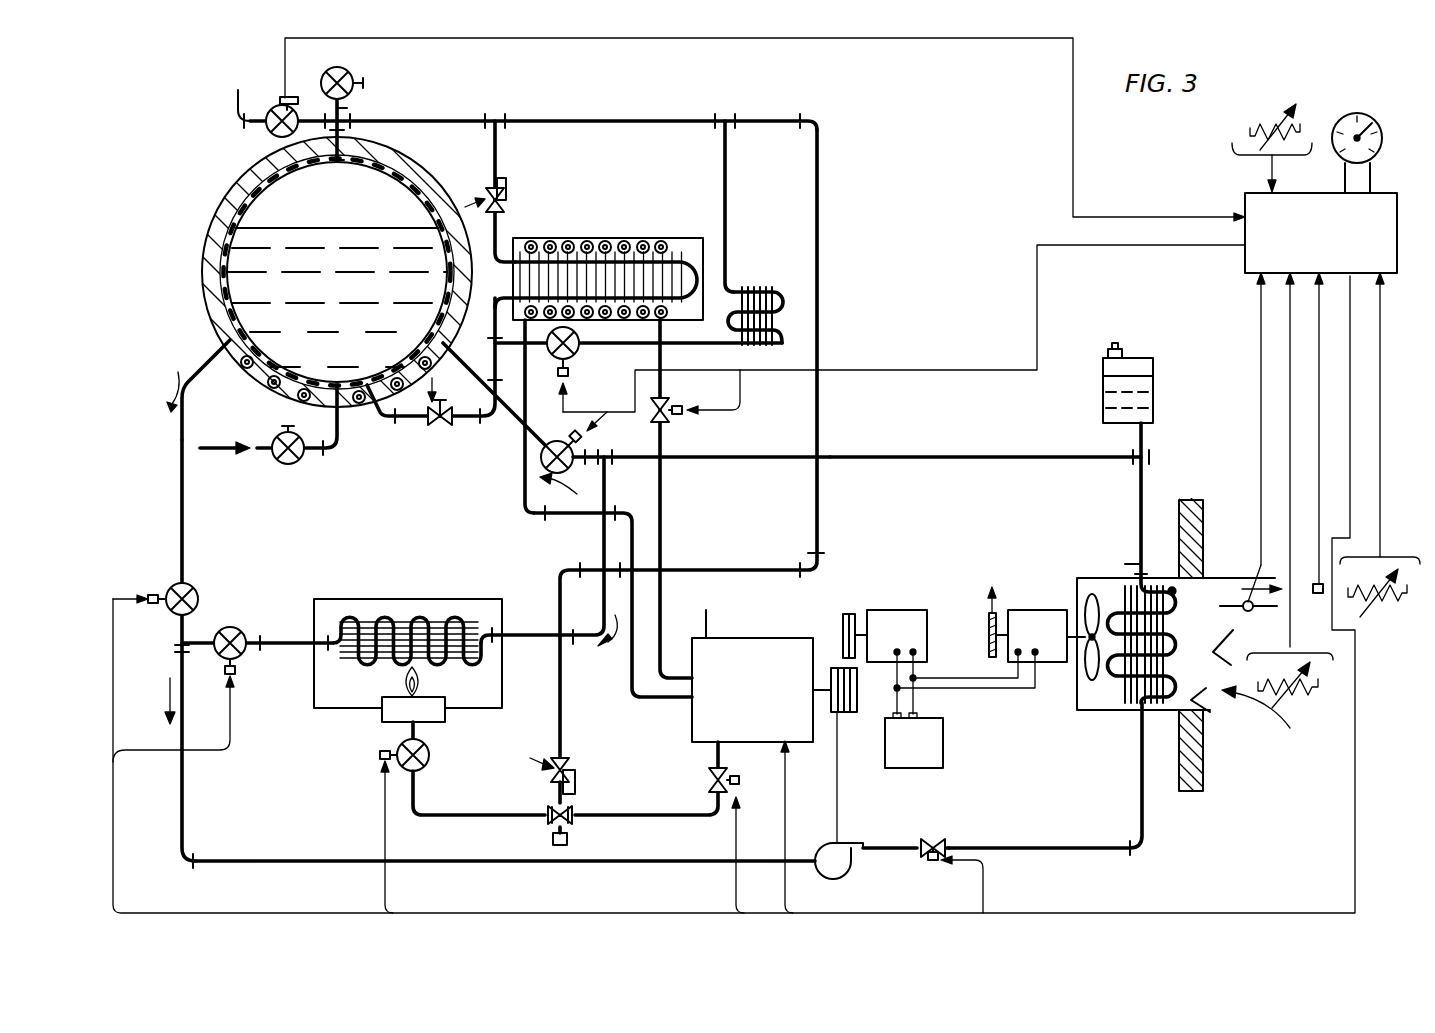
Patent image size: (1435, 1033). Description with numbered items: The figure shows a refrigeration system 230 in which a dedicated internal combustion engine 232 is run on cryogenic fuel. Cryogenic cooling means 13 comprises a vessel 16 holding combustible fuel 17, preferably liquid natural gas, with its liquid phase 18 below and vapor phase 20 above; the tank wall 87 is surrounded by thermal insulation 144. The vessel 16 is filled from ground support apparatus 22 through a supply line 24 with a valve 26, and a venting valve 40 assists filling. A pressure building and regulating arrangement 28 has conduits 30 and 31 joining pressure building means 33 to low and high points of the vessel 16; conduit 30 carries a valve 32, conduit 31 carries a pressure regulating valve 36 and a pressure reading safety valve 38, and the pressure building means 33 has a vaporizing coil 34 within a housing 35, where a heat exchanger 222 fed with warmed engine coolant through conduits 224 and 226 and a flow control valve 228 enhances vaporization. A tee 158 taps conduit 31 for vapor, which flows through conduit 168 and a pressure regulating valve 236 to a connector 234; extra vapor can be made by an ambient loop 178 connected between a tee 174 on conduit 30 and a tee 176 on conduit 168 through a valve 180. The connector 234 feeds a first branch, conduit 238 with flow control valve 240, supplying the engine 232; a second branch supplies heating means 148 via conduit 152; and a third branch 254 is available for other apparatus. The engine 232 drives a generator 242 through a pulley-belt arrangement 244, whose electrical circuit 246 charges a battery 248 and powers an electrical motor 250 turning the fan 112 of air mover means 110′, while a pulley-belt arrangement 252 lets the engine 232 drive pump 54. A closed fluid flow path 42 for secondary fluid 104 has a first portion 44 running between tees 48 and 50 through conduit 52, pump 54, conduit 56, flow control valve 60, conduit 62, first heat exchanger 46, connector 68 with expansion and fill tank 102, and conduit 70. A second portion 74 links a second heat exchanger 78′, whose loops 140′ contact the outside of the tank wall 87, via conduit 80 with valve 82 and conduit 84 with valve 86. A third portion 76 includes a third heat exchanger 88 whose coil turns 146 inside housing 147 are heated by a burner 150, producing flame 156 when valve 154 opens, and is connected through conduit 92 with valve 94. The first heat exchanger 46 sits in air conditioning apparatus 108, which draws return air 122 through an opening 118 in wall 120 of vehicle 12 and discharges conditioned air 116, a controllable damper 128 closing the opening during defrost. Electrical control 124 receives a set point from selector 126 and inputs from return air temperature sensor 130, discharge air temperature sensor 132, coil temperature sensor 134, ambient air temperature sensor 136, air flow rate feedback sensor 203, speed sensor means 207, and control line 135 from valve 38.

The control line 135 is at (836, 40).
The refrigeration system 230 is at (477, 86).
The conduit 31 is at (412, 121).
The tee 158 is at (495, 114).
The tee 176 is at (727, 133).
The conduit 168 is at (816, 213).
The venting valve 40 is at (350, 93).
The pressure reading safety valve 38 is at (268, 126).
The thermal insulation 144 is at (390, 160).
The vapor phase of fuel 20 is at (292, 205).
The liquid phase of fuel 18 is at (270, 224).
The cryogenic cooling means 13 is at (470, 176).
The pressure regulating valve 36 is at (502, 199).
The pressure building and regulating arrangement 28 is at (545, 229).
The pressure building means 33 is at (606, 240).
The heat exchanger 222 is at (640, 240).
The housing 35 is at (700, 240).
The vaporizing coil 34 is at (698, 262).
The ambient coil 178 is at (778, 296).
The combustible fuel 17 is at (333, 207).
The tank wall 87 is at (388, 176).
The vessel 16 is at (200, 304).
The coil turns or loops 140′ is at (307, 380).
The closed fluid flow path 42 is at (196, 373).
The conduit 84 is at (180, 440).
The ground support apparatus 22 is at (212, 446).
The valve 26 is at (275, 460).
The supply line 24 is at (338, 426).
The conduit 30 is at (422, 417).
The valve 32 is at (444, 420).
The tee 174 is at (454, 391).
The second heat exchanger 78′ is at (360, 407).
The conduit 80 is at (510, 406).
The valve 180 is at (575, 350).
The valve 82 is at (573, 436).
The flow control valve 228 is at (668, 404).
The tee 50 is at (605, 456).
The second portion 74 is at (525, 488).
The coolant conduit 226 is at (558, 517).
The coolant conduit 224 is at (662, 497).
The third portion 76 is at (551, 570).
The ambient air temperature sensor 136 is at (1268, 125).
The set point selector 126 is at (1382, 130).
The electrical control 124 is at (1243, 200).
The secondary fluid 104 is at (1142, 367).
The expansion and fill tank 102 is at (1154, 394).
The conduit 70 is at (1073, 455).
The connector 68 is at (1150, 460).
The vehicle 12 is at (1204, 500).
The air flow rate feedback sensor 203 is at (1313, 584).
The controllable damper 128 is at (1246, 600).
The air conditioning means 108 is at (1132, 578).
The discharge air 116 is at (1278, 606).
The discharge air temperature sensor 132 is at (1388, 605).
The coil temperature sensor 134 is at (1175, 594).
The first heat exchanger 46 is at (1162, 658).
The return air temperature sensor 130 is at (1292, 690).
The fan 112 is at (1092, 665).
The air mover means 110′ is at (1065, 724).
The opening 118 is at (1212, 706).
The return air 122 is at (1290, 728).
The wall 120 is at (1205, 773).
The conduit 62 is at (1141, 796).
The valve 86 is at (193, 588).
The valve 94 is at (224, 627).
The conduit 92 is at (283, 642).
The tee 48 is at (178, 644).
The first portion 44 is at (170, 698).
The third heat exchanger 88 is at (370, 618).
The coil turns 146 is at (448, 620).
The flame 156 is at (420, 683).
The housing 147 is at (346, 710).
The burner 150 is at (440, 720).
The valve 154 is at (397, 754).
The heating means 148 is at (490, 800).
The conduit 152 is at (418, 822).
The conduit 52 is at (320, 860).
The pressure regulating valve 236 is at (566, 762).
The connector 234 is at (568, 812).
The third branch 254 is at (552, 839).
The conduit 238 is at (645, 821).
The dedicated internal combustion engine 232 is at (778, 637).
The pulley-belt arrangement 244 is at (845, 640).
The electrical generator 242 is at (870, 610).
The speed sensor means 207 is at (988, 628).
The electrical motor 250 is at (1012, 610).
The electrical circuit 246 is at (958, 688).
The battery 248 is at (943, 746).
The flow control valve 240 is at (732, 780).
The pulley-belt arrangement 252 is at (838, 768).
The conduit 56 is at (882, 847).
The flow control valve 60 is at (936, 843).
The pump 54 is at (850, 878).